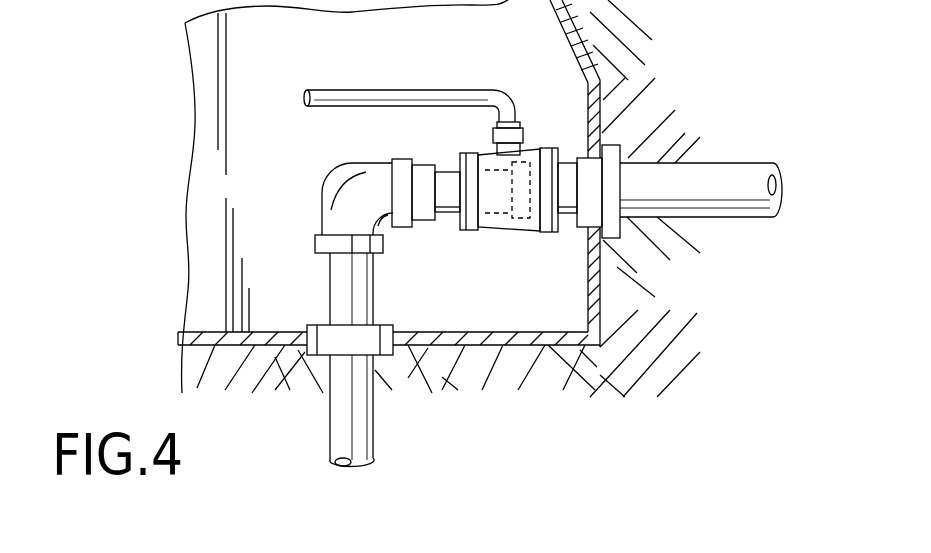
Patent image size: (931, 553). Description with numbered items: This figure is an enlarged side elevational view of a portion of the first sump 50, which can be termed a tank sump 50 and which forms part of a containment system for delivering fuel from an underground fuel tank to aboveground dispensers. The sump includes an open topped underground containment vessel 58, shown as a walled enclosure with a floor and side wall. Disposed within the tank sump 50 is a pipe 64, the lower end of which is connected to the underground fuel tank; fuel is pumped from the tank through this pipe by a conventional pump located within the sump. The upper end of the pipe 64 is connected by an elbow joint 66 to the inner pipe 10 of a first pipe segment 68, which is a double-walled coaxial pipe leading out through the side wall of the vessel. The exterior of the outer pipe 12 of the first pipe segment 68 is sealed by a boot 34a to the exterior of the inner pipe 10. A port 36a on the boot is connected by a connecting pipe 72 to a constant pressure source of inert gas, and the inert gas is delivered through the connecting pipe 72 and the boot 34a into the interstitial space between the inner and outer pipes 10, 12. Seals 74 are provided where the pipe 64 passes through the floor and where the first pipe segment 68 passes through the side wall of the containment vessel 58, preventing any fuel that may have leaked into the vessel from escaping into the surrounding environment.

The first sump 50 is at (165, 173).
The containment vessel 58 is at (207, 332).
The connecting pipe 72 is at (400, 97).
The port 36a is at (518, 137).
The outer pipe 12 is at (518, 192).
The boot 34a is at (493, 223).
The elbow joint 66 is at (332, 183).
The inner pipe 10 is at (452, 205).
The seals 74 is at (608, 198).
The first pipe segment 68 is at (722, 192).
The pipe 64 is at (368, 412).